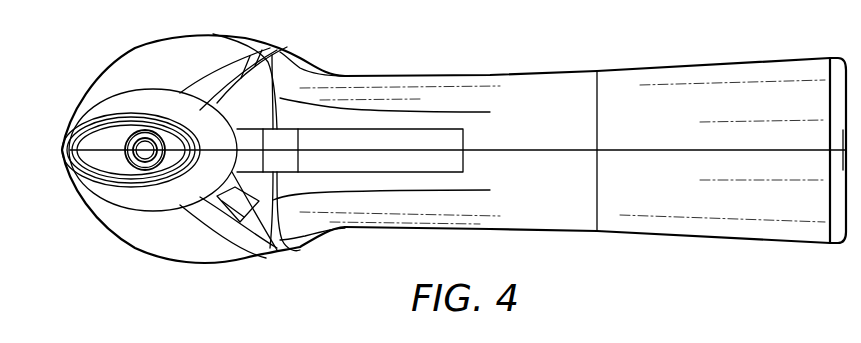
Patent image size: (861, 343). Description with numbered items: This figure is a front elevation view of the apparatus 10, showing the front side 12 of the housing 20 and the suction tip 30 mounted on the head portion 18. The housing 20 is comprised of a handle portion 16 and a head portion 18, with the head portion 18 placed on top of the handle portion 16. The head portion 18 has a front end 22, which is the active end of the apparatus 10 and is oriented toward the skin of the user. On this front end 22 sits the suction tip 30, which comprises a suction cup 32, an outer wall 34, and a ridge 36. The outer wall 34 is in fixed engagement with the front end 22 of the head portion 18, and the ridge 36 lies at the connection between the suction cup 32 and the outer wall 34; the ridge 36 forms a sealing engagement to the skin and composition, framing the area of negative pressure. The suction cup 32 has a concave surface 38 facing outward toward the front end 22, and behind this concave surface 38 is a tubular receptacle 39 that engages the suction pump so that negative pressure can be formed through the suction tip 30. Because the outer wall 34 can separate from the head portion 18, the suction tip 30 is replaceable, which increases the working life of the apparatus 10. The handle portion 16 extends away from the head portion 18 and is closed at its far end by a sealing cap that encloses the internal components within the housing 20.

The apparatus 10 is at (349, 40).
The front side 12 is at (662, 227).
The handle portion 16 is at (800, 227).
The head portion 18 is at (138, 245).
The housing 20 is at (795, 63).
The front end 22 is at (210, 230).
The suction tip 30 is at (138, 116).
The suction cup 32 is at (95, 143).
The outer wall 34 is at (160, 100).
The ridge 36 is at (108, 126).
The concave surface 38 is at (97, 157).
The tubular receptacle 39 is at (133, 162).